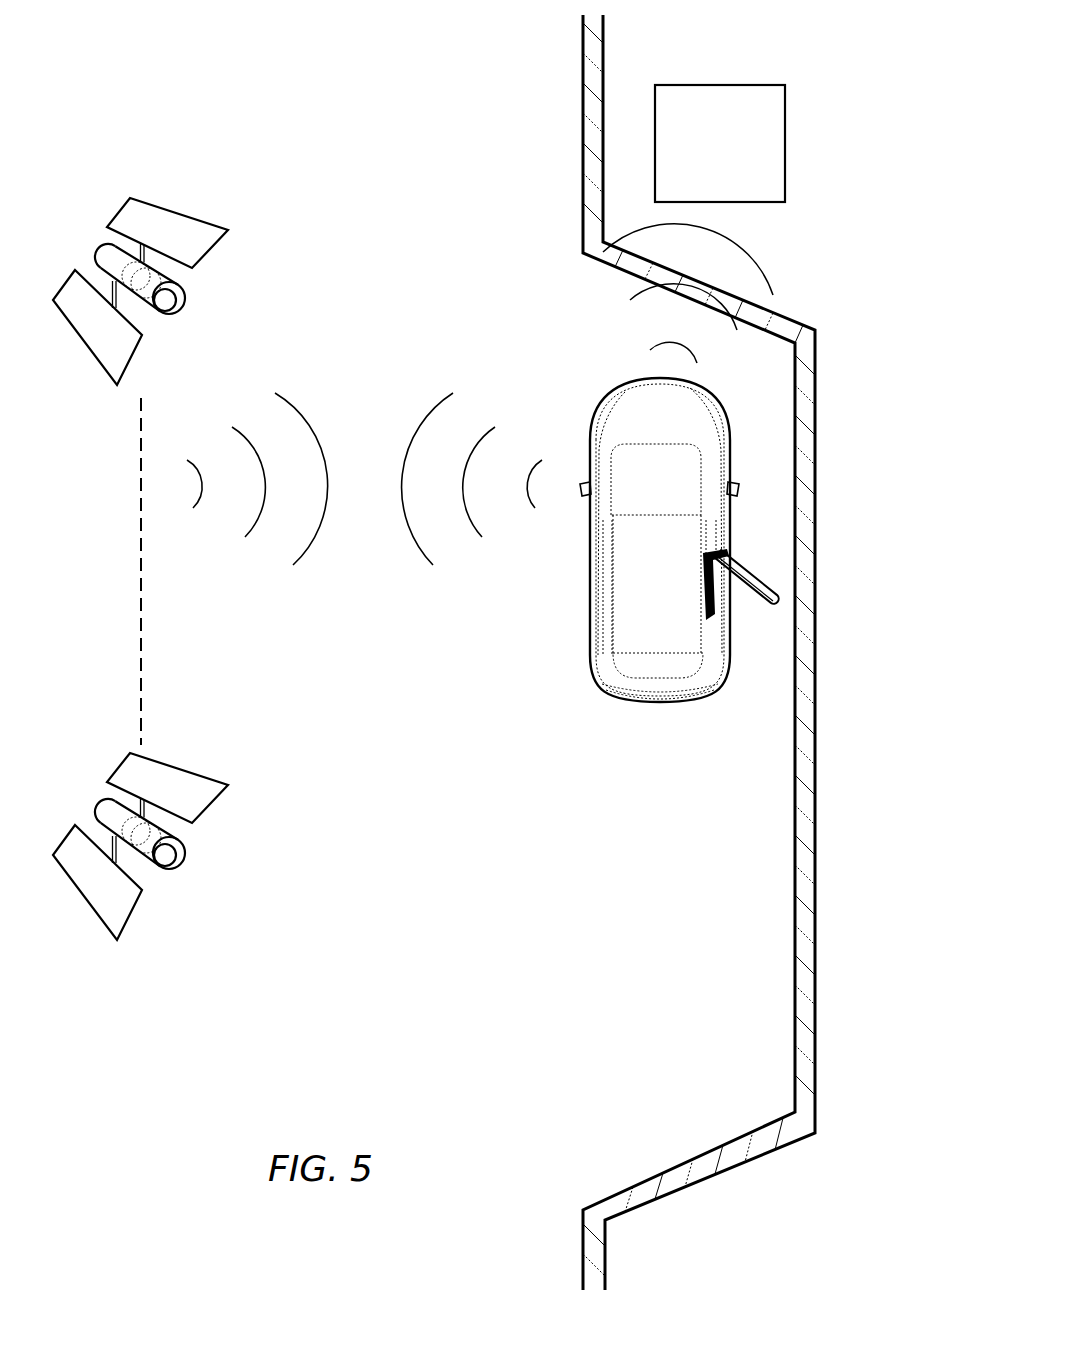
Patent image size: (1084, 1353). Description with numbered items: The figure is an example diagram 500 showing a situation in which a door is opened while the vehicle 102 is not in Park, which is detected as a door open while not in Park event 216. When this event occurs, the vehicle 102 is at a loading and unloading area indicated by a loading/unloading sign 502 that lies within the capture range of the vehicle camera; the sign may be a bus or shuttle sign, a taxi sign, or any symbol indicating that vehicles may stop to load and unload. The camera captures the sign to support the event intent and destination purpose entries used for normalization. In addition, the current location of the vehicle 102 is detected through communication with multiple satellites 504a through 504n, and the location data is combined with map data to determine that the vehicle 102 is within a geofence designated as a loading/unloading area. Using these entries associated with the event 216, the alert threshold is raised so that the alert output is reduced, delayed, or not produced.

The vehicle 102 is at (652, 592).
The door open while not in Park event 216 is at (765, 562).
The loading/unloading zone environment 500 is at (314, 1095).
The loading/unloading sign 502 is at (787, 109).
The satellite 504a is at (193, 217).
The satellite 504n is at (193, 772).